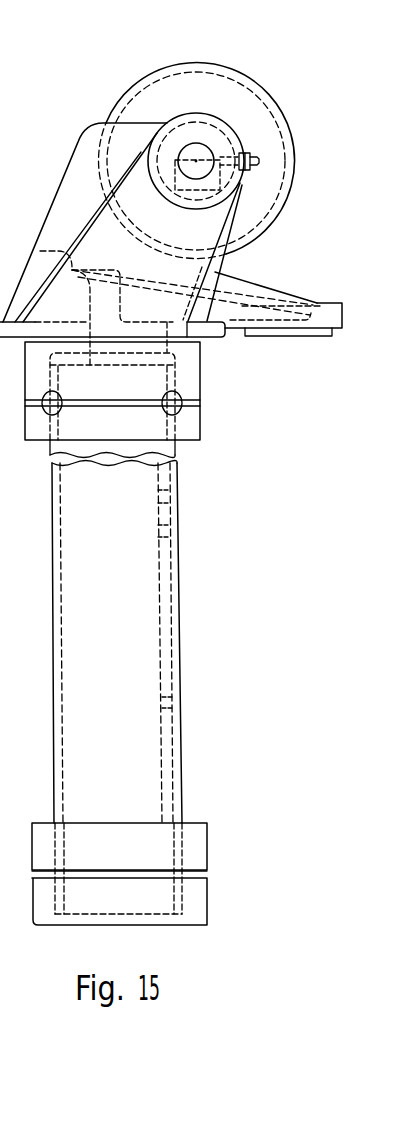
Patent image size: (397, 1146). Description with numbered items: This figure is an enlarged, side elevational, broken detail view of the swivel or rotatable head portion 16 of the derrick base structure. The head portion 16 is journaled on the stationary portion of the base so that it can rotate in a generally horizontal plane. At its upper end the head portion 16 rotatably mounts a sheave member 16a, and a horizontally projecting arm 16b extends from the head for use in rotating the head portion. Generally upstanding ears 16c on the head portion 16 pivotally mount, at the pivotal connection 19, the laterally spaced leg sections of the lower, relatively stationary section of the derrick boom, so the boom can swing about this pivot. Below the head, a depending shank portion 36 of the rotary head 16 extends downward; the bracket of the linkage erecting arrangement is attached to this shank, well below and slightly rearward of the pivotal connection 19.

The rotatable or swivel head portion 16 is at (201, 361).
The sheave member 16a is at (222, 87).
The horizontally projecting arm 16b is at (343, 313).
The upstanding ears 16c is at (132, 188).
The pivotal connection 19 is at (200, 148).
The depending shank portion 36 is at (150, 592).